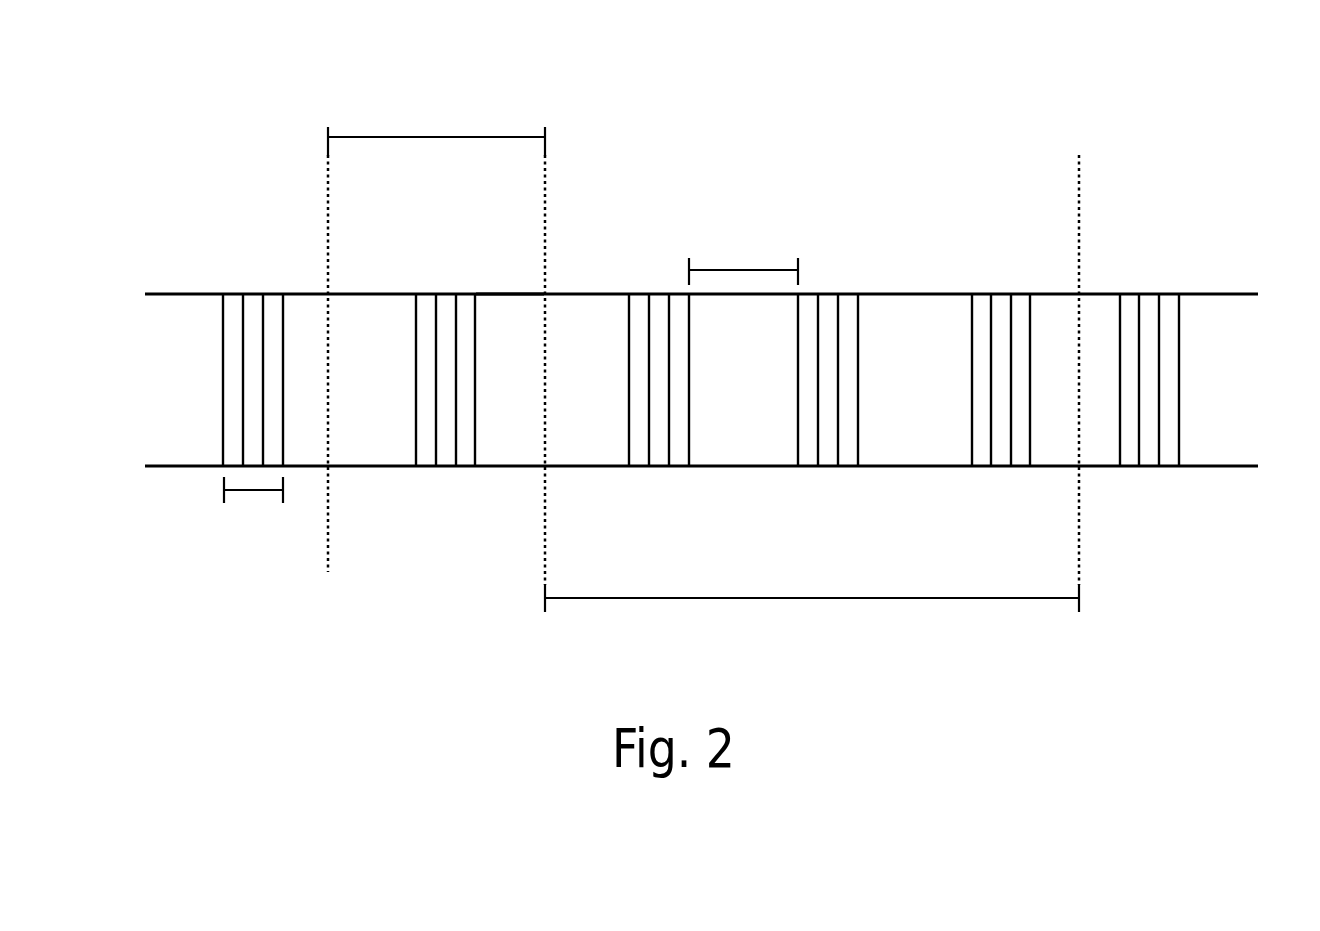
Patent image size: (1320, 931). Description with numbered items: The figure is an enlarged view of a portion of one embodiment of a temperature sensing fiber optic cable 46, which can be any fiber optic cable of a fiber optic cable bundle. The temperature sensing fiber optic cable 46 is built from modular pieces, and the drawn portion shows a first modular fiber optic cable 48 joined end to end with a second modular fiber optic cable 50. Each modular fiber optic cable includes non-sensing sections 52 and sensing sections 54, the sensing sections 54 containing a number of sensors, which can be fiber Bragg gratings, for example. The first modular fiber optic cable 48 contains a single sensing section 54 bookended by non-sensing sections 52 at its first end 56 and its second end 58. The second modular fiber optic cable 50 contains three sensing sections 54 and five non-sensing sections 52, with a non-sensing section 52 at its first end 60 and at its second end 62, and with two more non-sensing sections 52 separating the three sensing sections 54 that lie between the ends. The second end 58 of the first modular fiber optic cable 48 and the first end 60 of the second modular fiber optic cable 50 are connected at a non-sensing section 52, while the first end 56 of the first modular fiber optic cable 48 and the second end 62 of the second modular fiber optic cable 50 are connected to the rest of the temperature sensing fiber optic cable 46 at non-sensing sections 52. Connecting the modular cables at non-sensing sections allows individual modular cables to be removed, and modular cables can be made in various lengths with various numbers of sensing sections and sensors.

The temperature sensing fiber optic cable 46 is at (213, 117).
The first modular fiber optic cable 48 is at (436, 132).
The second modular fiber optic cable 50 is at (812, 607).
The non-sensing section 52 is at (743, 263).
The sensing section 54 is at (253, 500).
The first end of first modular fiber optic cable 56 is at (362, 278).
The second end of first modular fiber optic cable 58 is at (508, 278).
The first end of second modular fiber optic cable 60 is at (570, 280).
The second end of second modular fiber optic cable 62 is at (1063, 278).